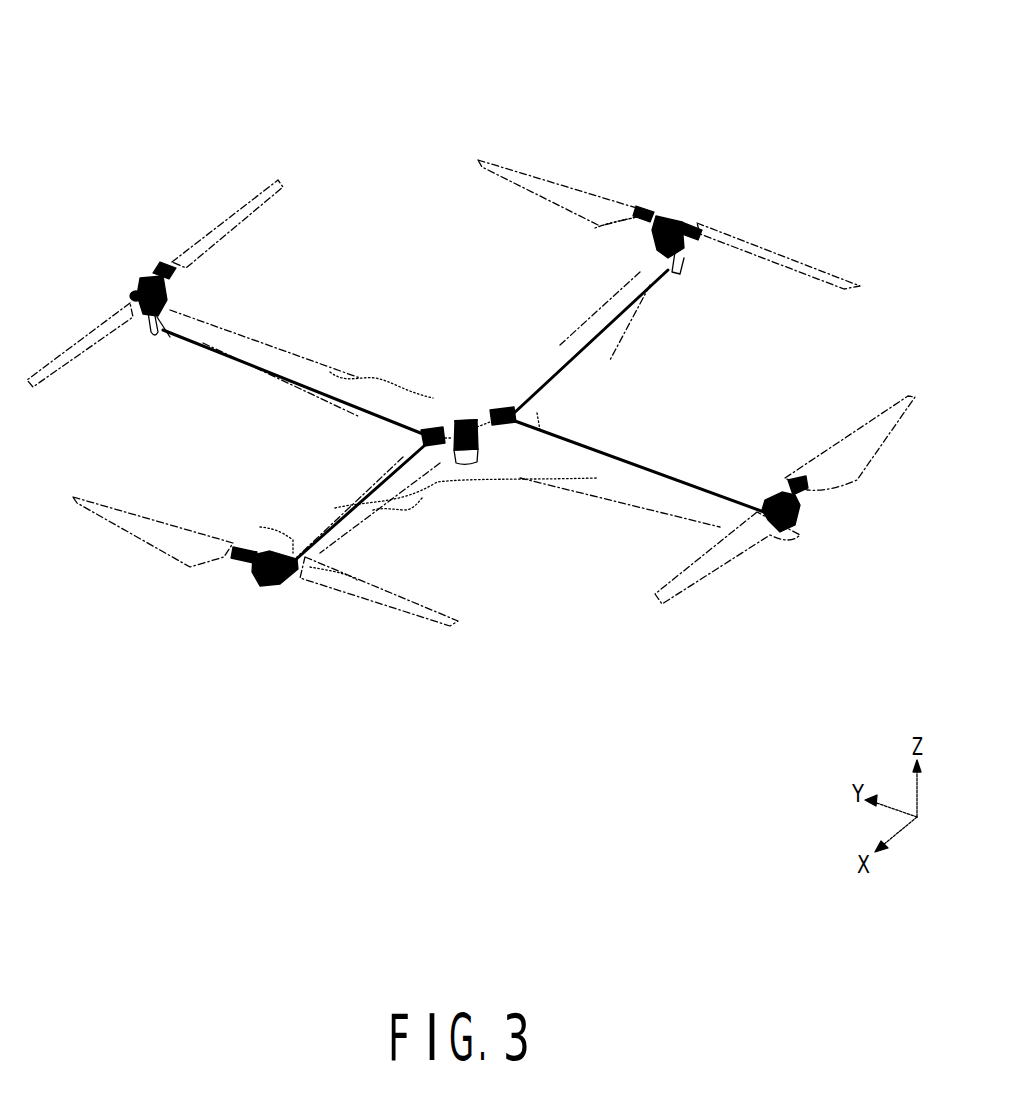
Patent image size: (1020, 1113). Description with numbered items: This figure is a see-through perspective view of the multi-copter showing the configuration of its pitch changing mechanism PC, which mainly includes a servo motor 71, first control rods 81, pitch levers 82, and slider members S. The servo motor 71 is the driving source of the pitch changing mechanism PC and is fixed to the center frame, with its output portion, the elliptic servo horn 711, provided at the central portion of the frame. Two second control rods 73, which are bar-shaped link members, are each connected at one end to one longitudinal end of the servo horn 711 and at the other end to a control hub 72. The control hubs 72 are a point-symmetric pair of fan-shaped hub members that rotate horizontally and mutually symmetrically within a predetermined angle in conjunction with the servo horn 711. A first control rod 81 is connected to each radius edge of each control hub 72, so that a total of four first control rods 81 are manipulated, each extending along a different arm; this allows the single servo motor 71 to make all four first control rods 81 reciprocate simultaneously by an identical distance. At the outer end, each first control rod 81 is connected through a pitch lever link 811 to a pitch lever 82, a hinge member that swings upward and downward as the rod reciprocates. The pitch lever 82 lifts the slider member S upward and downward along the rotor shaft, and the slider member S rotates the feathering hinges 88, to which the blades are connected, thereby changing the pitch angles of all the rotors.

The pitch changing mechanism PC is at (90, 42).
The servo motor 71 is at (477, 465).
The servo horn 711 is at (453, 421).
The control hub 72 is at (488, 409).
The second control rod 73 is at (449, 428).
The first control rod 81 is at (240, 360).
The pitch lever link 811 is at (157, 327).
The pitch lever 82 is at (175, 292).
The feathering hinge 88 is at (163, 268).
The slider member S is at (135, 318).